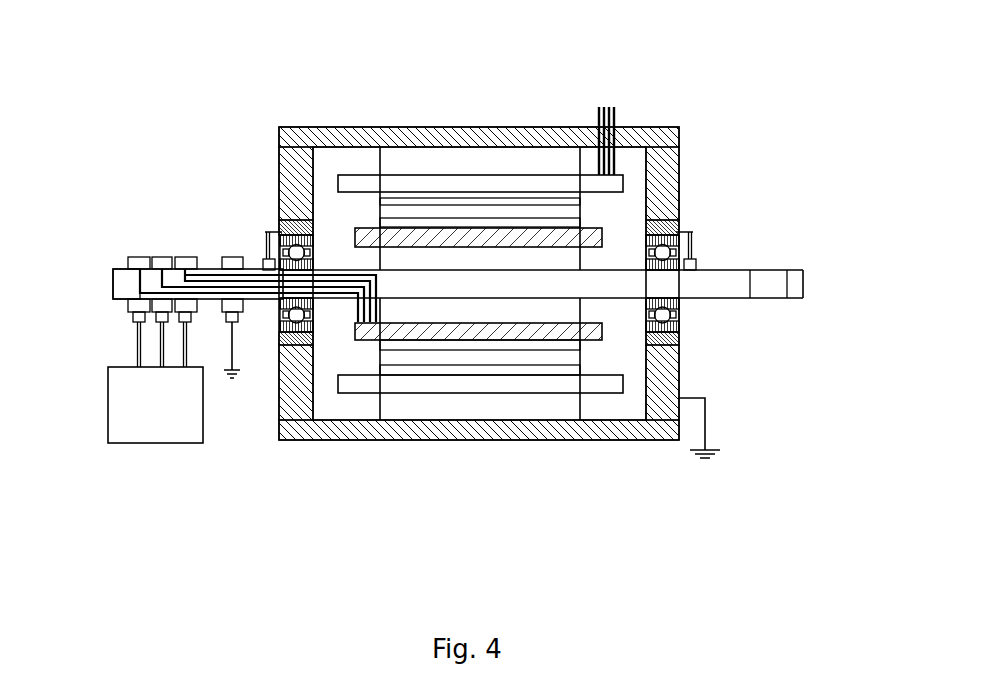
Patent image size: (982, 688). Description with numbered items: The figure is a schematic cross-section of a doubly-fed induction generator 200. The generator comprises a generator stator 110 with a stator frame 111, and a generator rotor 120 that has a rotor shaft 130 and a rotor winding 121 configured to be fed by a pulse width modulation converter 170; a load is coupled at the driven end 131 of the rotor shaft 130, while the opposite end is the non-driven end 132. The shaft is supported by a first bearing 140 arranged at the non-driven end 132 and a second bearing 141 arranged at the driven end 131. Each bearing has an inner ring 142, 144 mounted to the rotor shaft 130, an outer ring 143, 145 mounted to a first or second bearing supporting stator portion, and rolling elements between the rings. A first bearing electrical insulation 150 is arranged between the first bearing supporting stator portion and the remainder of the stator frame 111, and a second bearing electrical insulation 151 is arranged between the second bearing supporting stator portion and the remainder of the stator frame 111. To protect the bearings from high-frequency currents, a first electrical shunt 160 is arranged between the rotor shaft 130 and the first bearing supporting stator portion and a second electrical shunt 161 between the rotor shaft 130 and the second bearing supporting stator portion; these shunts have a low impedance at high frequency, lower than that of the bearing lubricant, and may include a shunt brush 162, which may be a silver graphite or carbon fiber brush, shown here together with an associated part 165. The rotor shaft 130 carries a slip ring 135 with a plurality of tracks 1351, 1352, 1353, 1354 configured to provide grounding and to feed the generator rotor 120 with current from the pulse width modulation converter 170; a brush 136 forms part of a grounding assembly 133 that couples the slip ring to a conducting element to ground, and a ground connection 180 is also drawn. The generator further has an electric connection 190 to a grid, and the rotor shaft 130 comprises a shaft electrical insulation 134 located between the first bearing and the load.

The doubly-fed induction generator 200 is at (204, 107).
The slip ring 135 is at (139, 150).
The track 1351 is at (232, 257).
The track 1352 is at (115, 270).
The track 1353 is at (140, 257).
The track 1354 is at (165, 257).
The non-driven end 132 is at (113, 292).
The grounding assembly 133 is at (228, 330).
The brush 136 is at (238, 320).
The pulse width modulation converter 170 is at (108, 412).
The first electrical shunt 160 is at (271, 228).
The first bearing 140 is at (322, 236).
The first bearing electrical insulation 150 is at (315, 302).
The outer ring 143 is at (285, 338).
The inner ring 142 is at (347, 298).
The electric connection 190 is at (614, 107).
The second electrical shunt 161 is at (788, 160).
The wire fixing block 165 is at (693, 262).
The shunt brush 162 is at (688, 242).
The second bearing 141 is at (695, 296).
The shaft electrical insulation 134 is at (777, 277).
The driven end 131 is at (803, 284).
The rotor shaft 130 is at (745, 298).
The inner ring 144 is at (680, 305).
The outer ring 145 is at (680, 328).
The second bearing electrical insulation 151 is at (665, 352).
The ground 180 is at (720, 452).
The generator stator 110 is at (416, 412).
The stator frame 111 is at (547, 428).
The generator rotor 120 is at (532, 307).
The rotor winding 121 is at (605, 330).